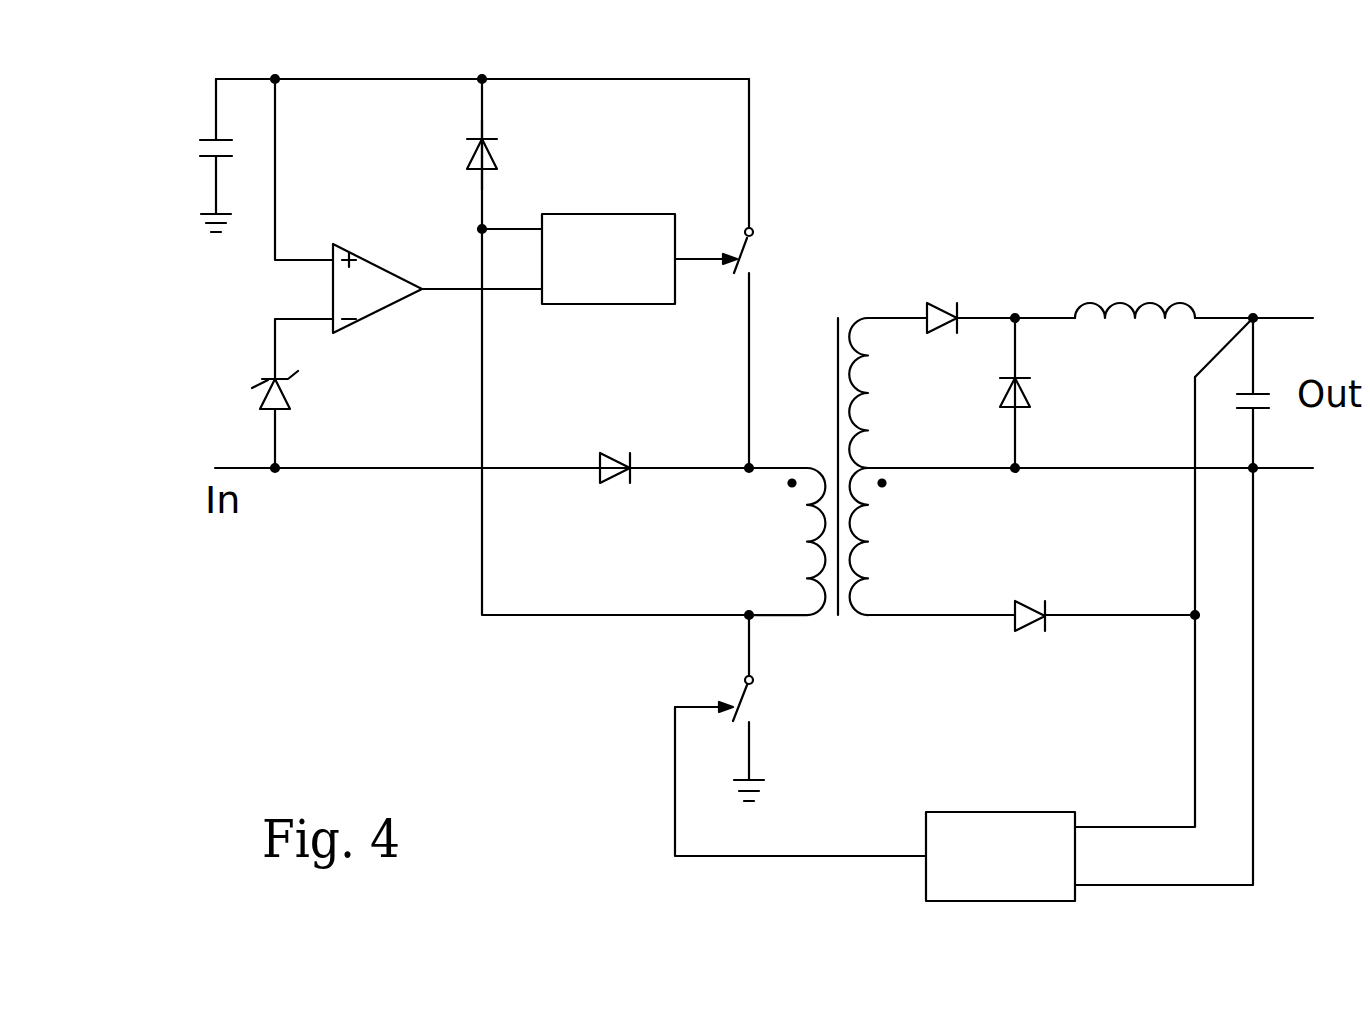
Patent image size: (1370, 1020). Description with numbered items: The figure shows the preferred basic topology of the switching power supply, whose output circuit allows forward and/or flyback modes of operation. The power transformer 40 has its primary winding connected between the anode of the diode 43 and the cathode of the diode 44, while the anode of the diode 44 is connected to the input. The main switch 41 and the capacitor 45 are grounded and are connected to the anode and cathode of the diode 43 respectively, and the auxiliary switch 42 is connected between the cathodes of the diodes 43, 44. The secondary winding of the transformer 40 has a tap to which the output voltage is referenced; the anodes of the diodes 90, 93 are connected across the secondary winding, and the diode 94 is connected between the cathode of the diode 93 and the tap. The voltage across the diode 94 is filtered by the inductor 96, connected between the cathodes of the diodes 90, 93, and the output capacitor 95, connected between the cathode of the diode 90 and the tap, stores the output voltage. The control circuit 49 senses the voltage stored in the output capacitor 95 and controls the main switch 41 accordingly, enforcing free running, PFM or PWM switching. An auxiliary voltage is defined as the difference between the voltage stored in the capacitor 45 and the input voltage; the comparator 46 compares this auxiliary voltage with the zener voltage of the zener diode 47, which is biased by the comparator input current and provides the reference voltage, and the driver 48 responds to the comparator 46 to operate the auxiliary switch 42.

The power transformer 40 is at (838, 318).
The main switch 41 is at (753, 679).
The auxiliary switch 42 is at (753, 231).
The diode 43 is at (472, 170).
The diode 44 is at (608, 482).
The capacitor 45 is at (210, 156).
The comparator 46 is at (368, 318).
The zener diode 47 is at (267, 378).
The driver 48 is at (575, 305).
The control circuit 49 is at (957, 810).
The diode 90 is at (1020, 632).
The diode 93 is at (934, 334).
The diode 94 is at (1006, 407).
The output capacitor 95 is at (1260, 409).
The inductor 96 is at (1180, 302).